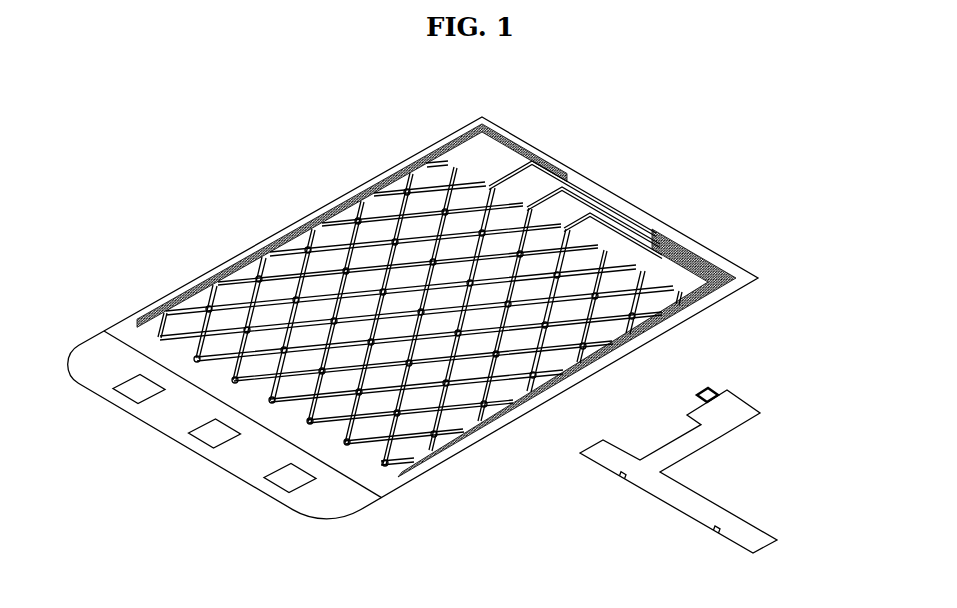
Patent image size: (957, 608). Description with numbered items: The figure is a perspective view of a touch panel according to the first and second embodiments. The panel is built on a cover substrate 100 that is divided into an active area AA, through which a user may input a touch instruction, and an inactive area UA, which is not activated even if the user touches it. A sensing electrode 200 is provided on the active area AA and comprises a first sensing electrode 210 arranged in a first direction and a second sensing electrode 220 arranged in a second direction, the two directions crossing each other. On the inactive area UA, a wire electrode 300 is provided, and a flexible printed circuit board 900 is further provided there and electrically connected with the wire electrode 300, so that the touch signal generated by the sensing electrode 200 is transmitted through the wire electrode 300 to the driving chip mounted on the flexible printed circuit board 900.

The cover substrate 100 is at (145, 307).
The sensing electrode 200 is at (828, 240).
The first sensing electrode 210 is at (623, 310).
The second sensing electrode 220 is at (627, 278).
The wire electrode 300 is at (512, 150).
The flexible printed circuit board 900 is at (687, 450).
The active area AA is at (556, 362).
The inactive area UA is at (180, 415).